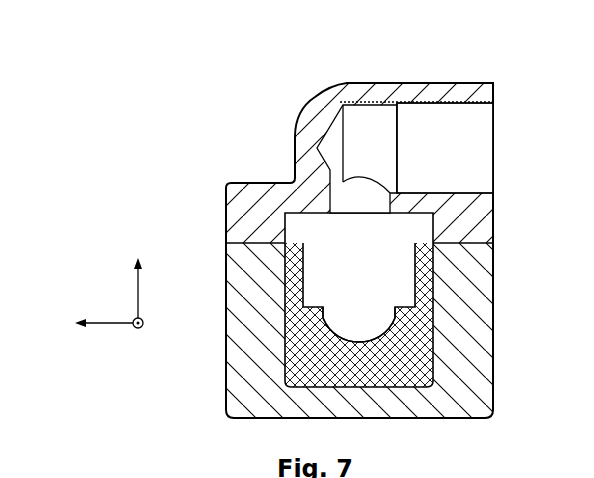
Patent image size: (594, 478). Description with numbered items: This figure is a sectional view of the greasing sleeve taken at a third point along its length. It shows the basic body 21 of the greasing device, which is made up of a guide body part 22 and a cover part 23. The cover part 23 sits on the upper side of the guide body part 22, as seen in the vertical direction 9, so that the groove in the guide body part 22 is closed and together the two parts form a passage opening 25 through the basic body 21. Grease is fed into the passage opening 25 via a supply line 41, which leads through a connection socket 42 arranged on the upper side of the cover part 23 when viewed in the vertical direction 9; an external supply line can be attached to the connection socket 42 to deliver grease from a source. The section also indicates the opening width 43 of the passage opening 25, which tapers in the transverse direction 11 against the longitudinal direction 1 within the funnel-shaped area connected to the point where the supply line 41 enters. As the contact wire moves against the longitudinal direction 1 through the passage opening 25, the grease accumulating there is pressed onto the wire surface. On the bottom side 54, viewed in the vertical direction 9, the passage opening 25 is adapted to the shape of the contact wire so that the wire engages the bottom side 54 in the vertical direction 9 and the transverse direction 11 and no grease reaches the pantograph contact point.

The longitudinal direction 1 is at (147, 323).
The vertical direction 9 is at (135, 268).
The transverse direction 11 is at (83, 312).
The basic body 21 is at (360, 229).
The guide body part 22 is at (493, 303).
The cover part 23 is at (332, 177).
The passage opening 25 is at (374, 327).
The supply line 41 is at (433, 157).
The connection socket 42 is at (442, 83).
The opening width 43 is at (363, 268).
The bottom side 54 is at (351, 337).